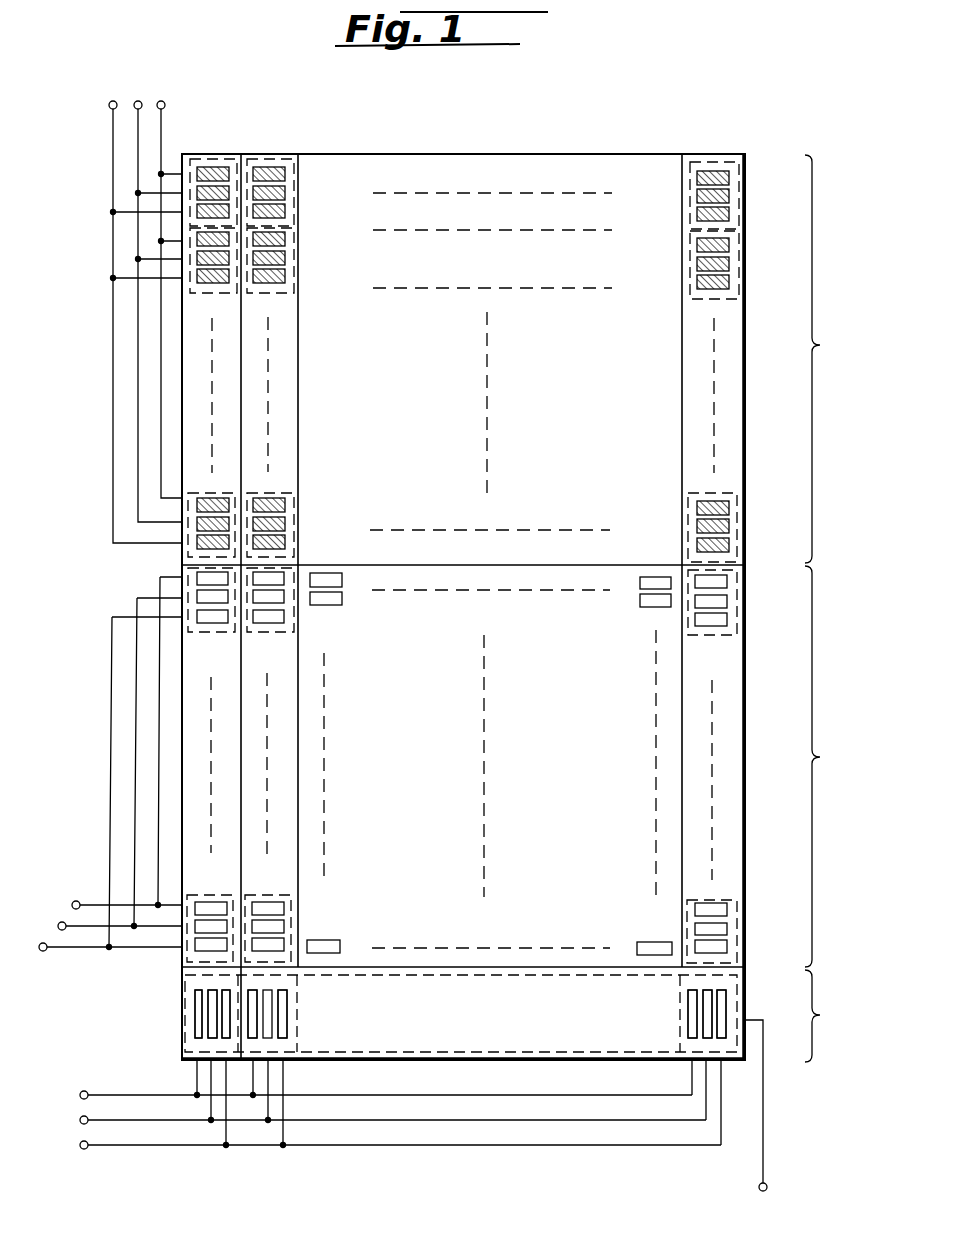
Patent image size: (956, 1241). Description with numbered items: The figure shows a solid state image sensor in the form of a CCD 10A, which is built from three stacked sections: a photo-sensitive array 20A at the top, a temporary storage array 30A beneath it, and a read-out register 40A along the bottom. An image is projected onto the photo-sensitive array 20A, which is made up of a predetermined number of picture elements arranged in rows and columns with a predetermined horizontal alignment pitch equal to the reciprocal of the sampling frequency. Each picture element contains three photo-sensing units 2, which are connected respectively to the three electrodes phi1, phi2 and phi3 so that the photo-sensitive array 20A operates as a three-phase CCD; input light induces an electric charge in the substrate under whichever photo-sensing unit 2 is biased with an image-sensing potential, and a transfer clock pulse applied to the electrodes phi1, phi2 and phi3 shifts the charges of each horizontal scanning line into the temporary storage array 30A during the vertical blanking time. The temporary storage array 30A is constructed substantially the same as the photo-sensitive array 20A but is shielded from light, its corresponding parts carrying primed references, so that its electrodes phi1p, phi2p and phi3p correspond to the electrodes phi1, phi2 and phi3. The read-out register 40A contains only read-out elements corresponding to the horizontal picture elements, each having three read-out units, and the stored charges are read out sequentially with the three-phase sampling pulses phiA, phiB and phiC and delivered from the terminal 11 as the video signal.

The CCD 10A is at (528, 137).
The photo-sensitive array 20A is at (874, 361).
The temporary storage array 30A is at (877, 777).
The read-out register 40A is at (876, 1034).
The photo-sensing unit 2 is at (285, 276).
The terminal 11 is at (768, 1184).
The electrode phi1 is at (168, 288).
The electrode phi2 is at (154, 300).
The electrode phi3 is at (140, 311).
The electrode phi1p is at (111, 746).
The electrode phi2p is at (105, 767).
The electrode phi3p is at (96, 788).
The sampling pulse phiA is at (367, 1084).
The sampling pulse phiB is at (374, 1097).
The sampling pulse phiC is at (382, 1110).